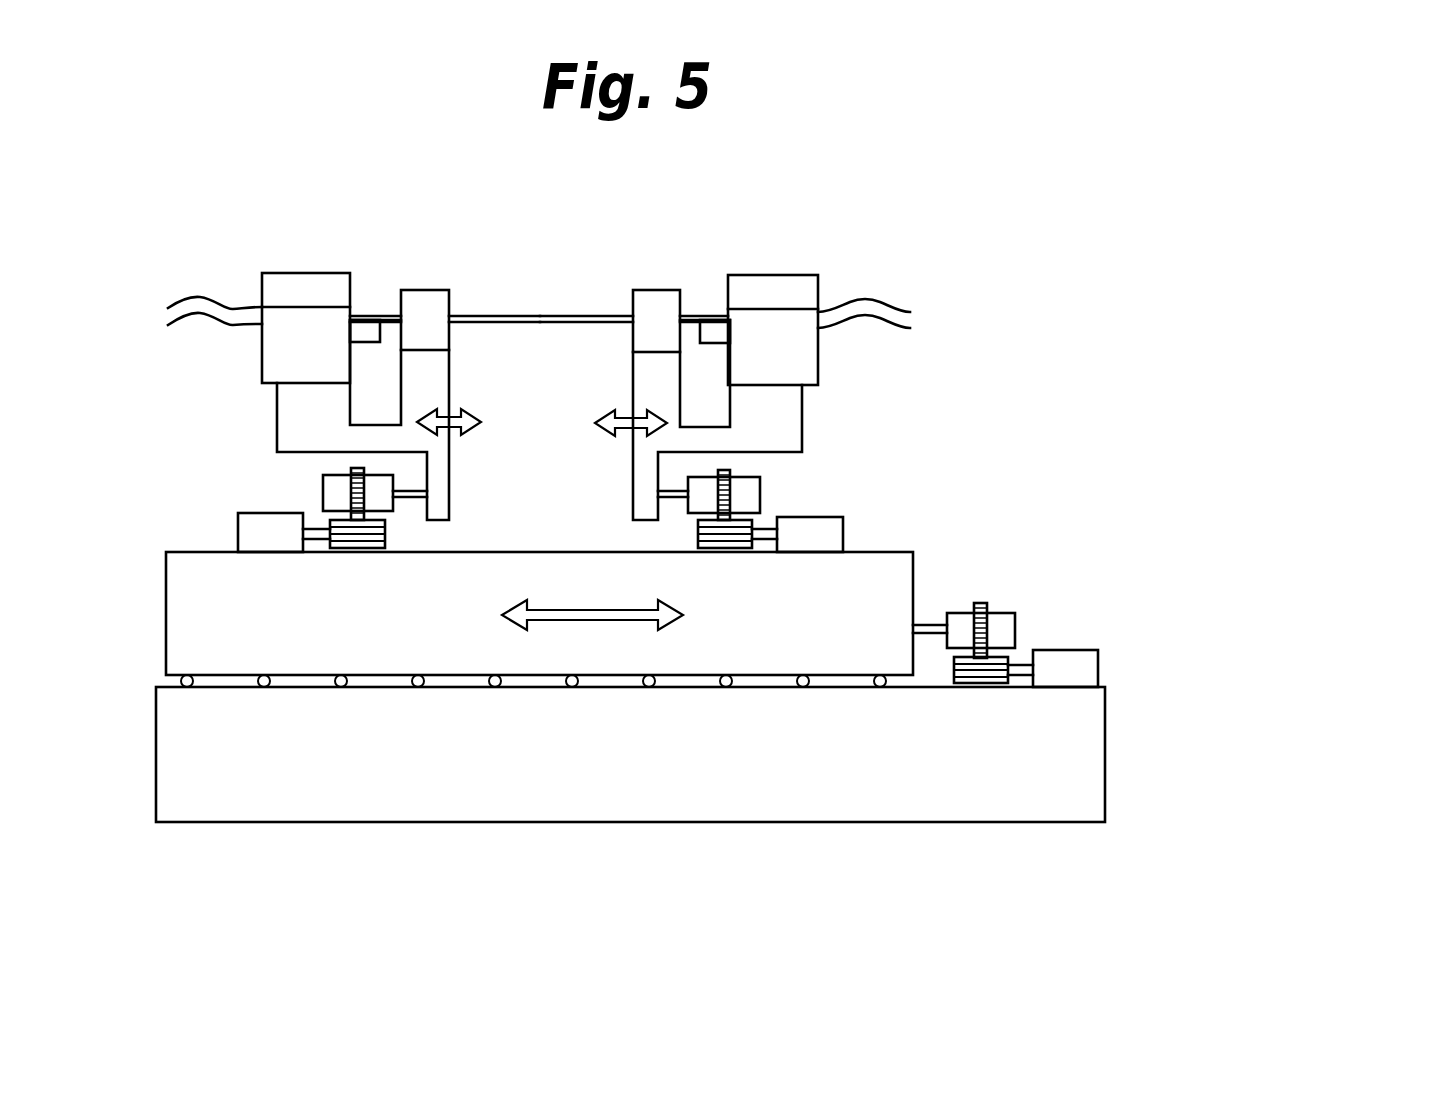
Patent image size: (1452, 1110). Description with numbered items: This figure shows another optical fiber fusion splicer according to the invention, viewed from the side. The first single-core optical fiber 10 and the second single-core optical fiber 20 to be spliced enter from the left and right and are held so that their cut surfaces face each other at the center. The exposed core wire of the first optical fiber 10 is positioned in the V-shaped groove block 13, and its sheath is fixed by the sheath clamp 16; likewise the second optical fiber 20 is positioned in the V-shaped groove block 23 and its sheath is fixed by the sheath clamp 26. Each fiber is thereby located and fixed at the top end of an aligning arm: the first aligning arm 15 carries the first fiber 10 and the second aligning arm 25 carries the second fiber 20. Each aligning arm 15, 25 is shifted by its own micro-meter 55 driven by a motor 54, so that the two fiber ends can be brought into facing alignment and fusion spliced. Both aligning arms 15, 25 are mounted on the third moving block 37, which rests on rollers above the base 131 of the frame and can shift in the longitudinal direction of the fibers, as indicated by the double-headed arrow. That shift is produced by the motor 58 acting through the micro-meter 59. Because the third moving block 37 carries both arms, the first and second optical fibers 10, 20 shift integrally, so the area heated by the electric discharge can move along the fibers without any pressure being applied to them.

The first single-core optical fiber 10 is at (490, 315).
The second single-core optical fiber 20 is at (591, 315).
The V-shaped groove block 13 is at (418, 305).
The first aligning arm 15 is at (432, 382).
The sheath clamp 16 is at (297, 285).
The V-shaped groove block 23 is at (655, 305).
The second aligning arm 25 is at (787, 420).
The sheath clamp 26 is at (787, 285).
The third moving block 37 is at (900, 578).
The motor 54 is at (250, 532).
The micro-meter 55 is at (332, 489).
The motor 58 is at (1077, 658).
The micro-meter 59 is at (1003, 620).
The base 131 is at (665, 808).